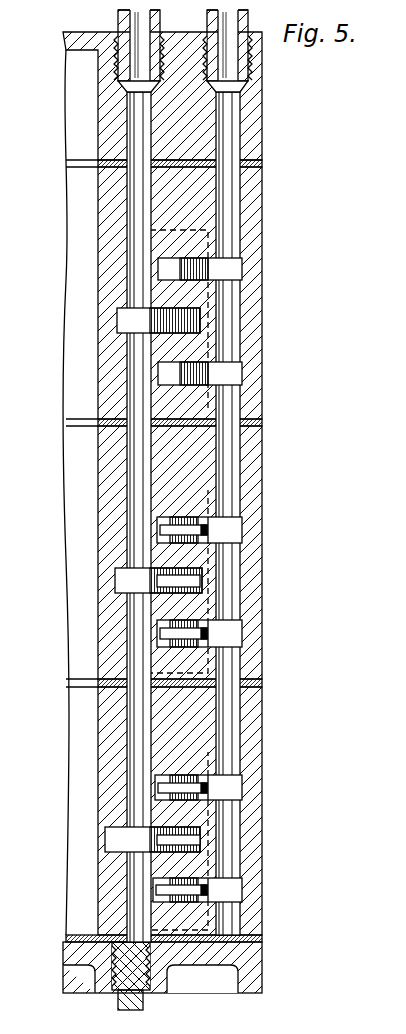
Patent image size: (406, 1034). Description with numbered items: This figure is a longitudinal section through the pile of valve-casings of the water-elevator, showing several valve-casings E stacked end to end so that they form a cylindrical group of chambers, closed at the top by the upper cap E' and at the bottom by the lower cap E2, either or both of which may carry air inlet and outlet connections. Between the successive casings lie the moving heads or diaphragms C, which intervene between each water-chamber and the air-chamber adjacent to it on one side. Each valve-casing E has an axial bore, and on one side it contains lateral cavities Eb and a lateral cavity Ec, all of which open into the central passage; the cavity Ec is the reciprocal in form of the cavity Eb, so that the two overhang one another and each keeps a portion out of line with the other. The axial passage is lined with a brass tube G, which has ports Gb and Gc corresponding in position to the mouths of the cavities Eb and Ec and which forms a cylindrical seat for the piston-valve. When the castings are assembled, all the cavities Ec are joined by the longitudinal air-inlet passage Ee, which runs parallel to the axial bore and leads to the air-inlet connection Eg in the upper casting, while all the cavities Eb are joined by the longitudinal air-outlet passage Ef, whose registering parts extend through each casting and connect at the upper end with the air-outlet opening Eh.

The upper cap E' is at (188, 96).
The valve-casing E is at (187, 492).
The lower cap E2 is at (225, 962).
The moving head C is at (283, 681).
The lateral cavity Eb is at (298, 870).
The lateral cavity Ec is at (115, 840).
The air-inlet passage Ee is at (137, 455).
The air-outlet passage Ef is at (232, 455).
The air-inlet connection Eg is at (137, 55).
The air-outlet opening Eh is at (230, 60).
The brass tube G is at (284, 754).
The port Gb is at (293, 894).
The port Gc is at (285, 838).